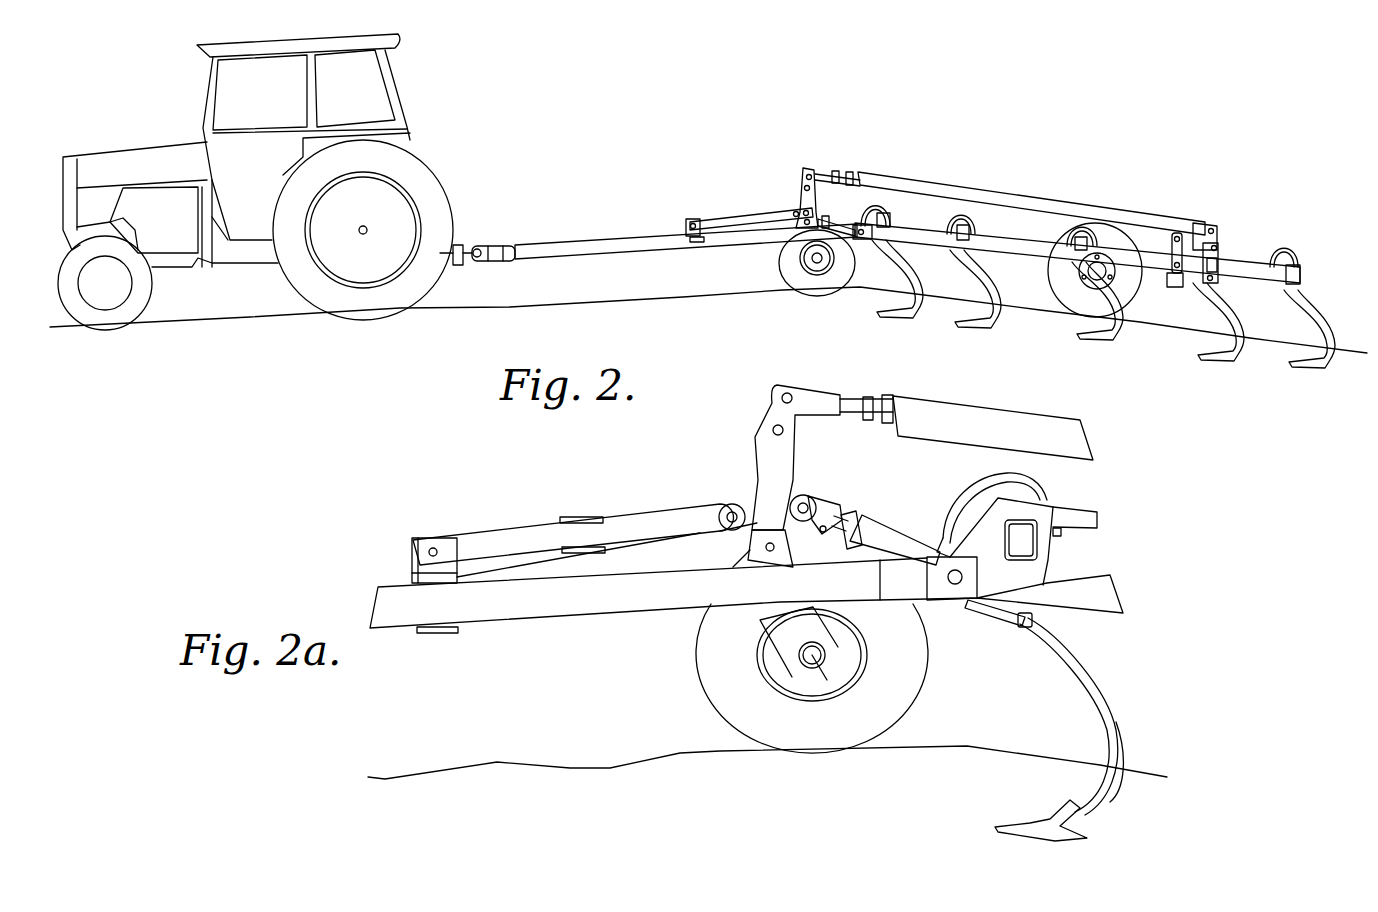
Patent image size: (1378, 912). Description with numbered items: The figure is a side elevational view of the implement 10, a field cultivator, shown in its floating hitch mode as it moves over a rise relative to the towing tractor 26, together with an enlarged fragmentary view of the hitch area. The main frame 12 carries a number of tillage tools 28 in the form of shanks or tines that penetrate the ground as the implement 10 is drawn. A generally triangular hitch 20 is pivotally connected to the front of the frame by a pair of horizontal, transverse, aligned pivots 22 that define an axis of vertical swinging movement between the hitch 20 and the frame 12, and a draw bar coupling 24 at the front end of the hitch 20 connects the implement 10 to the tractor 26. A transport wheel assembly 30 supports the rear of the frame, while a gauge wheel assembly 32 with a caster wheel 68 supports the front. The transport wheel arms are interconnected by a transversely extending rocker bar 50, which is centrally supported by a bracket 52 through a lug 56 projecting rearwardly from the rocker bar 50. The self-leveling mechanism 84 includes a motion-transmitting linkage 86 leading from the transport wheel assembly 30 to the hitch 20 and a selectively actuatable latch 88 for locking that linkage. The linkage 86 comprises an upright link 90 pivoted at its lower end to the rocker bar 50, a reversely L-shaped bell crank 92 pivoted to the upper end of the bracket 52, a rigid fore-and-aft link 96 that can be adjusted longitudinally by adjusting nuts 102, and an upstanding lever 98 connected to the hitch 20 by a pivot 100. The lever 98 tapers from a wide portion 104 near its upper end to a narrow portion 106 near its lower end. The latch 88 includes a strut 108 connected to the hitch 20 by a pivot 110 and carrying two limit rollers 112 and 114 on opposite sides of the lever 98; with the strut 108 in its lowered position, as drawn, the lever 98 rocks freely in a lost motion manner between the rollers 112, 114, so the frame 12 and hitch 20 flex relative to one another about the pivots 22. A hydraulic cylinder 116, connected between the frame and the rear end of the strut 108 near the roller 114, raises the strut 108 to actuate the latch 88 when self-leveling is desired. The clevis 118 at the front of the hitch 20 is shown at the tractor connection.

In FIG. 2, the implement 10 is at (969, 110).
In FIG. 2, the main frame 12 is at (1292, 245).
In FIG. 2A, the main frame 12 is at (1138, 584).
In FIG. 2, the hitch 20 is at (569, 229).
In FIG. 2A, the hitch 20 is at (504, 634).
In FIG. 2, the pivots 22 is at (864, 238).
In FIG. 2A, the pivots 22 is at (954, 585).
In FIG. 2, the draw bar coupling 24 is at (468, 247).
In FIG. 2, the tractor 26 is at (392, 81).
In FIG. 2, the tillage tools 28 is at (913, 272).
In FIG. 2A, the tillage tools 28 is at (1100, 682).
In FIG. 2, the transport wheel assembly 30 is at (1185, 322).
In FIG. 2, the gauge wheel assembly 32 is at (781, 281).
In FIG. 2A, the gauge wheel assembly 32 is at (796, 678).
In FIG. 2, the rocker bar 50 is at (1172, 284).
In FIG. 2, the bracket 52 is at (1211, 247).
In FIG. 2, the lug 56 is at (1228, 303).
In FIG. 2, the caster wheel 68 is at (822, 282).
In FIG. 2A, the caster wheel 68 is at (912, 697).
In FIG. 2, the self-leveling mechanism 84 is at (1010, 153).
In FIG. 2, the linkage 86 is at (1197, 204).
In FIG. 2A, the linkage 86 is at (782, 374).
In FIG. 2, the latch 88 is at (751, 205).
In FIG. 2A, the latch 88 is at (645, 503).
In FIG. 2, the upright link 90 is at (1175, 236).
In FIG. 2, the bell crank 92 is at (1198, 239).
In FIG. 2, the link 96 is at (1050, 206).
In FIG. 2A, the link 96 is at (1023, 415).
In FIG. 2, the lever 98 is at (798, 190).
In FIG. 2A, the lever 98 is at (775, 494).
In FIG. 2A, the pivot 100 is at (772, 552).
In FIG. 2A, the adjusting nuts 102 is at (870, 395).
In FIG. 2A, the wide portion 104 is at (760, 435).
In FIG. 2A, the narrow portion 106 is at (768, 514).
In FIG. 2, the strut 108 is at (707, 220).
In FIG. 2A, the strut 108 is at (553, 530).
In FIG. 2A, the pivot 110 is at (432, 548).
In FIG. 2A, the limit roller 112 is at (728, 510).
In FIG. 2A, the limit roller 114 is at (813, 497).
In FIG. 2, the hydraulic cylinder 116 is at (841, 220).
In FIG. 2A, the hydraulic cylinder 116 is at (890, 543).
In FIG. 2, the hitch clevis 118 is at (477, 258).